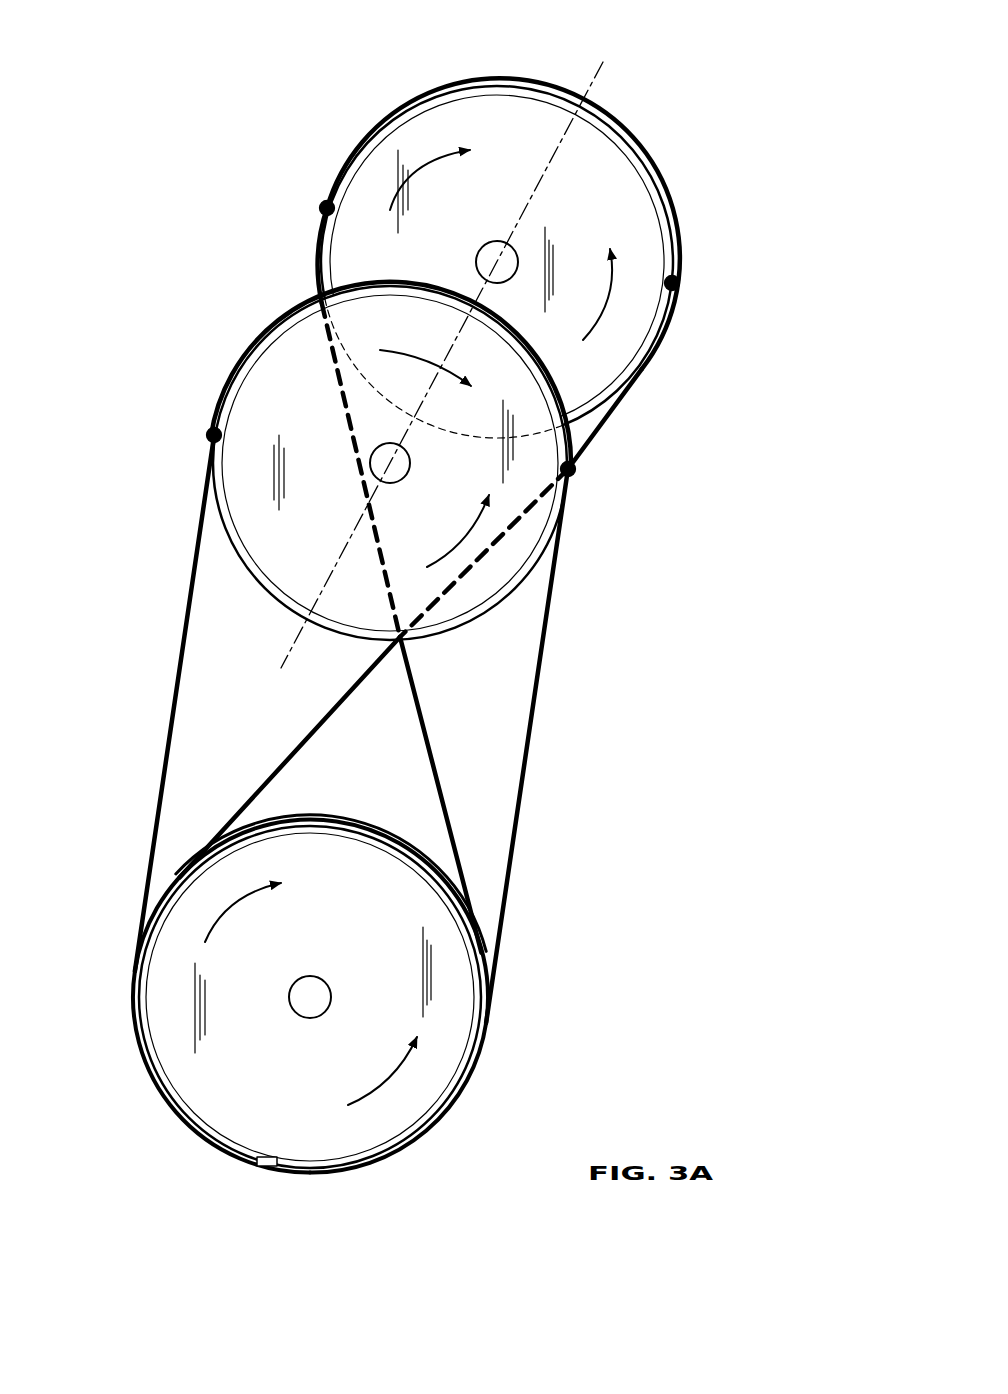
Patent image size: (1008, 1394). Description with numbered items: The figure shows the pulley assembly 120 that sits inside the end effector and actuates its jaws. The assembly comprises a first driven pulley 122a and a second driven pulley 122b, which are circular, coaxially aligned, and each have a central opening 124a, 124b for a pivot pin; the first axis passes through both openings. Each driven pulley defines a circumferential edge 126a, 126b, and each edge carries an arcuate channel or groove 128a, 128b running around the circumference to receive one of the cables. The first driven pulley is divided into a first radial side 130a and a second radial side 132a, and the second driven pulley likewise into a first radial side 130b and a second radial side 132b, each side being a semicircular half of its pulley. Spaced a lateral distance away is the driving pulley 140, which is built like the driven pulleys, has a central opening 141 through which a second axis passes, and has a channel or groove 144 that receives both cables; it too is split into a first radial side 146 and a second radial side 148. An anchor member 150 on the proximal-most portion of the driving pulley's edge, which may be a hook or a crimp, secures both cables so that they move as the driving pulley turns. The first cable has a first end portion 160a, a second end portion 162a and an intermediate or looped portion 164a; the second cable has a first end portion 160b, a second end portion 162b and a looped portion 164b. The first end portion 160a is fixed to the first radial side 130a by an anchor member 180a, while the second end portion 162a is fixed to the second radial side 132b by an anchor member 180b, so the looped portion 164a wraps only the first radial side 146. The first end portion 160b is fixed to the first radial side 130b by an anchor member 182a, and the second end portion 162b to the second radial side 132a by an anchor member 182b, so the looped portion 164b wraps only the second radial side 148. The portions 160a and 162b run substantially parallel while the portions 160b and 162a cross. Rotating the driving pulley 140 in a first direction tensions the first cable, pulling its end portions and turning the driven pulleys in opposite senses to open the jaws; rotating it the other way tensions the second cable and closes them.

The pulley assembly 120 is at (682, 497).
The first driven pulley 122a is at (255, 331).
The second driven pulley 122b is at (432, 83).
The central opening 124a is at (370, 467).
The central opening 124b is at (497, 262).
The circumferential edge 126a is at (233, 378).
The circumferential edge 126b is at (403, 111).
The channel or groove 128a is at (377, 284).
The channel or groove 128b is at (480, 84).
The first radial side 130a is at (243, 463).
The first radial side 130b is at (370, 187).
The second radial side 132a is at (565, 492).
The second radial side 132b is at (672, 310).
The driving pulley 140 is at (500, 1050).
The central opening 141 is at (331, 1000).
The channel or groove 144 is at (427, 860).
The first radial side 146 is at (227, 837).
The second radial side 148 is at (447, 950).
The anchor member 150 is at (265, 1170).
The first end portion 160a is at (158, 704).
The first end portion 160b is at (319, 231).
The second end portion 162a is at (632, 382).
The second end portion 162b is at (558, 746).
The intermediate or looped portion 164a is at (175, 1112).
The intermediate or looped portion 164b is at (427, 1130).
The anchor member 180a is at (213, 430).
The anchor member 180b is at (675, 280).
The anchor member 182a is at (322, 205).
The anchor member 182b is at (576, 469).